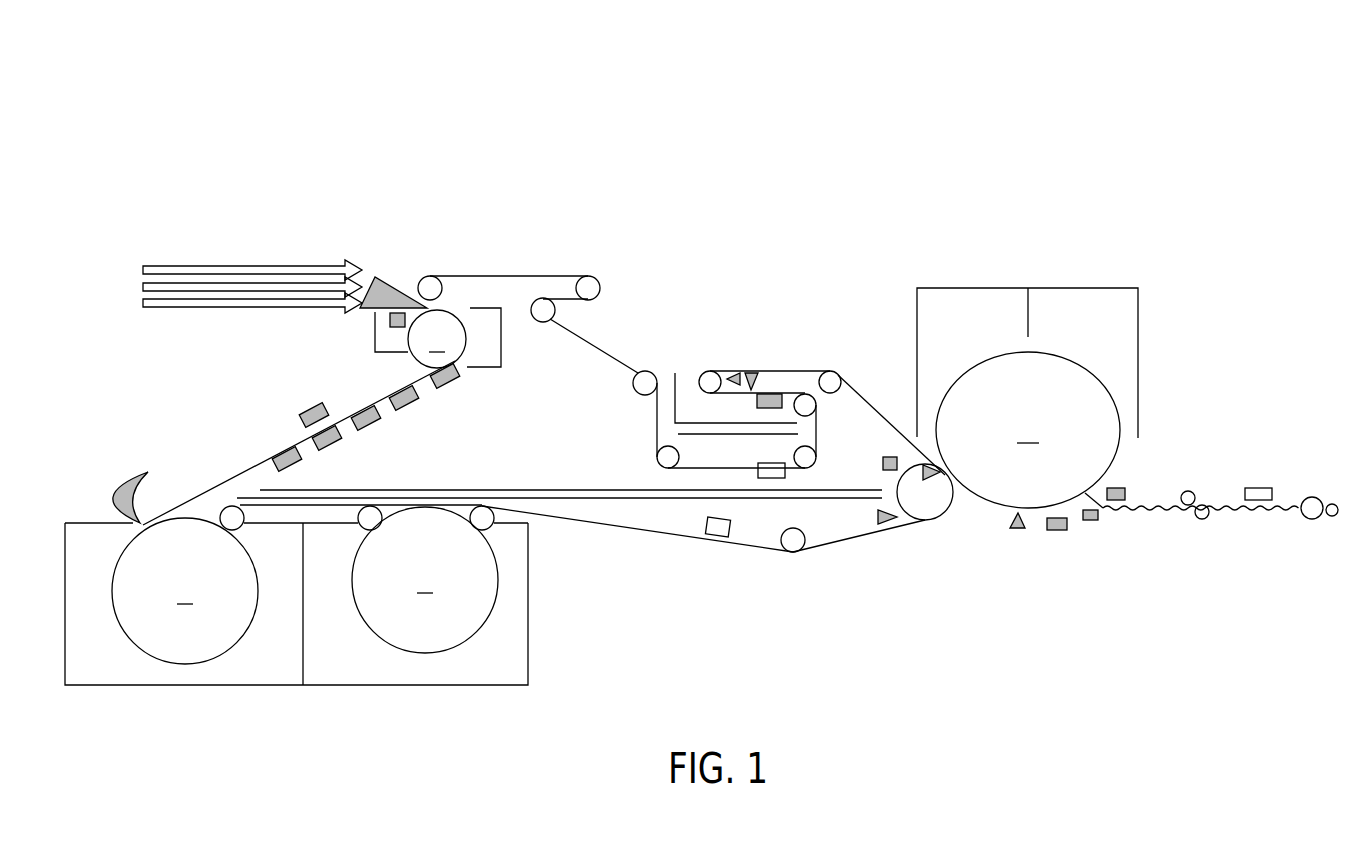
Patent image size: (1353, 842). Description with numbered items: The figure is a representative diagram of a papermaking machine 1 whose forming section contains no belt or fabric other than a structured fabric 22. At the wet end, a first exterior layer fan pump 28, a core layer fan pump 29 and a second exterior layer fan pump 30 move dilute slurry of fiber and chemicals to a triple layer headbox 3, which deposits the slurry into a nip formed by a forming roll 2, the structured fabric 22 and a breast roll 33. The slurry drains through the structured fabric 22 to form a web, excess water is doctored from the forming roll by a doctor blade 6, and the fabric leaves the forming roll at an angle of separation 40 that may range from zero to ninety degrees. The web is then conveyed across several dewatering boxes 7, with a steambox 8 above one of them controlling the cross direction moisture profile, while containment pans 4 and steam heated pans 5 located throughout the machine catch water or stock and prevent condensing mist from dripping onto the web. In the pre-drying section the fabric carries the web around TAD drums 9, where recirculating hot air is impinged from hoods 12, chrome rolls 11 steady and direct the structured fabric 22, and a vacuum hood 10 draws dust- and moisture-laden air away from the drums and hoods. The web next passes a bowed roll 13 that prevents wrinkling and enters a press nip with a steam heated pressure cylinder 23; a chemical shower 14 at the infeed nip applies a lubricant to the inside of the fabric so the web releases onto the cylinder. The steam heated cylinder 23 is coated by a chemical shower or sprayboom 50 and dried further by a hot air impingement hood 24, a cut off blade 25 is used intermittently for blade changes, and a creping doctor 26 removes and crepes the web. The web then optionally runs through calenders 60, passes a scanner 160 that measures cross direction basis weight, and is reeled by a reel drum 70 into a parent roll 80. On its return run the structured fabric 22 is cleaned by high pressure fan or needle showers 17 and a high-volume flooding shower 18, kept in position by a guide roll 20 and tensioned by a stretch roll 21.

The papermaking machine 1 is at (118, 184).
The forming roll 2 is at (437, 339).
The triple layer headbox 3 is at (388, 282).
The containment pans 4 is at (375, 331).
The steam heated pans 5 is at (407, 362).
The doctor blade 6 is at (882, 465).
The dewatering boxes 7 is at (318, 434).
The steambox 8 is at (308, 404).
The TAD drums 9 is at (305, 585).
The vacuum hood 10 is at (138, 468).
The chrome rolls 11 is at (228, 506).
The hoods 12 is at (97, 671).
The bowed roll 13 is at (790, 553).
The chemical shower 14 is at (756, 402).
The high pressure fan or needle showers 17 is at (762, 372).
The high-volume flooding shower 18 is at (727, 372).
The guide roll 20 is at (645, 371).
The stretch roll 21 is at (598, 283).
The structured fabric 22 is at (500, 277).
The steam heated pressure cylinder 23 is at (1055, 531).
The hot air impingement hood 24 is at (968, 293).
The cut off blade 25 is at (1125, 489).
The creping doctor 26 is at (1095, 521).
The first exterior layer fan pump 28 is at (143, 270).
The core layer fan pump 29 is at (143, 286).
The second exterior layer fan pump 30 is at (143, 306).
The breast roll 33 is at (428, 276).
The angle of separation 40 is at (403, 375).
The chemical shower or sprayboom 50 is at (1018, 530).
The calenders 60 is at (1192, 490).
The reel drum 70 is at (1318, 497).
The parent roll 80 is at (1332, 518).
The scanner 160 is at (1256, 487).